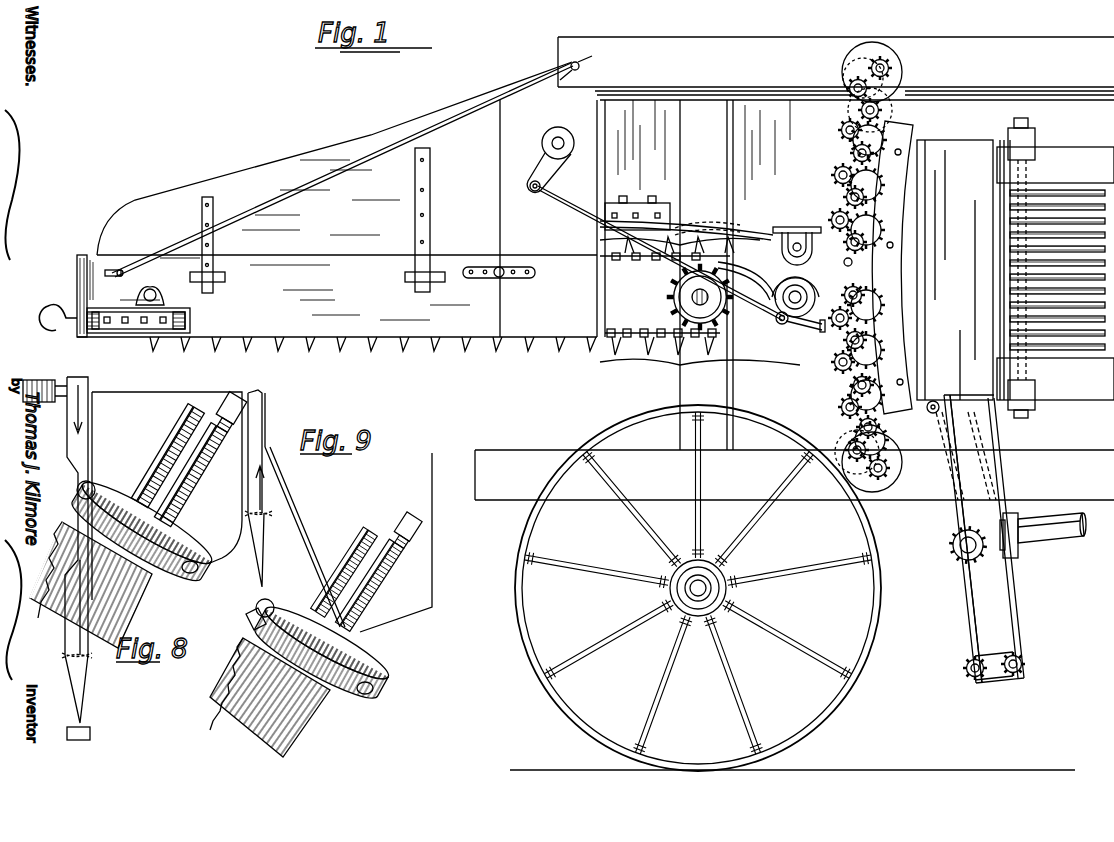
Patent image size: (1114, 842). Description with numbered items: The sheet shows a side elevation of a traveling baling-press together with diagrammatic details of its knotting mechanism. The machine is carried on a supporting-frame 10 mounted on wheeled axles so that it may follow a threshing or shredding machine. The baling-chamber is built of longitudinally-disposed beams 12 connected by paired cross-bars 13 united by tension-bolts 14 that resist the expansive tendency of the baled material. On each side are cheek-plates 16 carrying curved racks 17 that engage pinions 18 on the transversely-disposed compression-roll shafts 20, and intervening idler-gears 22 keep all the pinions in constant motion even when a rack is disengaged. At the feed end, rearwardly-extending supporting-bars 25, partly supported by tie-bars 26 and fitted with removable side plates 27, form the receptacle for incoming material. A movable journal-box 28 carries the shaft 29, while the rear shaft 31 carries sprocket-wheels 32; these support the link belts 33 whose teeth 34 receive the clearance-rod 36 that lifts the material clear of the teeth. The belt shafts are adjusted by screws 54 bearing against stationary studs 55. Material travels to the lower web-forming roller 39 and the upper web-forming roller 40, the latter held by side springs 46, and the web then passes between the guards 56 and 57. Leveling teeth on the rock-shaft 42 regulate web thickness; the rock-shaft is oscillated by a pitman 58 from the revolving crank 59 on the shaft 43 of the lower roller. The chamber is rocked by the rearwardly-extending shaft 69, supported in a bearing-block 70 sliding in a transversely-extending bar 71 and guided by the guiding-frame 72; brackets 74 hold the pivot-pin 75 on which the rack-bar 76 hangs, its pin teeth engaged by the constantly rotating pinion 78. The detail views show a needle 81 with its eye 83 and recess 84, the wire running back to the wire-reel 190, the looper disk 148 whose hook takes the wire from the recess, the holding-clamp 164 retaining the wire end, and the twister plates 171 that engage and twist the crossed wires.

In FIG. 1, the supporting-frame 10 is at (530, 450).
In FIG. 1, the longitudinally-disposed beams 12 is at (1085, 388).
In FIG. 1, the cross-bars 13 is at (1034, 398).
In FIG. 1, the tension-bolts 14 is at (1024, 266).
In FIG. 1, the cheek-plates 16 is at (955, 270).
In FIG. 1, the curved racks 17 is at (897, 260).
In FIG. 1, the pinions 18 is at (888, 485).
In FIG. 1, the compression-roll shafts 20 is at (895, 462).
In FIG. 1, the idler-gears 22 is at (846, 425).
In FIG. 1, the supporting-bars 25 is at (390, 312).
In FIG. 1, the tie-bars 26 is at (350, 152).
In FIG. 1, the side plates 27 is at (402, 210).
In FIG. 1, the journal-box 28 is at (164, 292).
In FIG. 1, the shaft 29 is at (140, 273).
In FIG. 1, the shaft 31 is at (692, 297).
In FIG. 1, the sprocket-wheels 32 is at (672, 290).
In FIG. 1, the link belts 33 is at (637, 327).
In FIG. 1, the teeth 34 is at (373, 352).
In FIG. 1, the clearance-rod 36 is at (747, 274).
In FIG. 1, the lower web-forming roller 39 is at (791, 292).
In FIG. 1, the upper web-forming roller 40 is at (768, 242).
In FIG. 1, the rock-shaft 42 is at (556, 140).
In FIG. 1, the shaft 43 is at (790, 328).
In FIG. 1, the side springs 46 is at (762, 220).
In FIG. 1, the screws 54 is at (58, 305).
In FIG. 1, the stationary studs 55 is at (108, 336).
In FIG. 1, the guard 56 is at (859, 262).
In FIG. 1, the guard 57 is at (534, 180).
In FIG. 1, the pitman 58 is at (578, 208).
In FIG. 9, the pitman 58 is at (252, 618).
In FIG. 1, the revolving crank 59 is at (768, 323).
In FIG. 1, the rearwardly-extending shaft 69 is at (1060, 538).
In FIG. 1, the bearing-block 70 is at (1020, 545).
In FIG. 1, the transversely-extending bar 71 is at (1016, 549).
In FIG. 1, the guiding-frame 72 is at (1014, 612).
In FIG. 1, the brackets 74 is at (966, 456).
In FIG. 1, the pivot-pin 75 is at (925, 416).
In FIG. 1, the rack-bar 76 is at (960, 574).
In FIG. 1, the pinion 78 is at (952, 545).
In FIG. 8, the needle 81 is at (88, 441).
In FIG. 9, the needle 81 is at (262, 421).
In FIG. 8, the eye 83 is at (84, 664).
In FIG. 9, the eye 83 is at (264, 521).
In FIG. 8, the recess 84 is at (84, 476).
In FIG. 9, the recess 84 is at (265, 444).
In FIG. 8, the looper disk 148 is at (96, 492).
In FIG. 9, the looper disk 148 is at (372, 654).
In FIG. 8, the holding-clamp 164 is at (191, 573).
In FIG. 9, the holding-clamp 164 is at (365, 695).
In FIG. 8, the twister plates 171 is at (213, 478).
In FIG. 9, the twister plates 171 is at (401, 588).
In FIG. 8, the wire-reel 190 is at (45, 379).